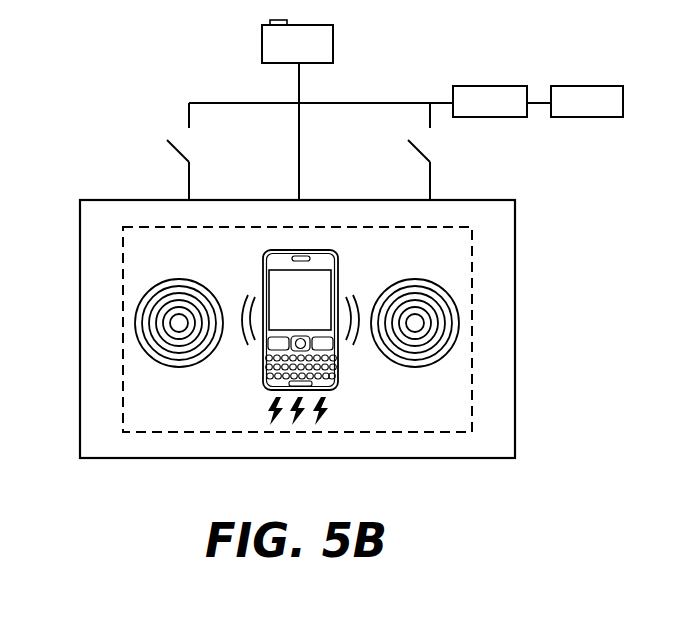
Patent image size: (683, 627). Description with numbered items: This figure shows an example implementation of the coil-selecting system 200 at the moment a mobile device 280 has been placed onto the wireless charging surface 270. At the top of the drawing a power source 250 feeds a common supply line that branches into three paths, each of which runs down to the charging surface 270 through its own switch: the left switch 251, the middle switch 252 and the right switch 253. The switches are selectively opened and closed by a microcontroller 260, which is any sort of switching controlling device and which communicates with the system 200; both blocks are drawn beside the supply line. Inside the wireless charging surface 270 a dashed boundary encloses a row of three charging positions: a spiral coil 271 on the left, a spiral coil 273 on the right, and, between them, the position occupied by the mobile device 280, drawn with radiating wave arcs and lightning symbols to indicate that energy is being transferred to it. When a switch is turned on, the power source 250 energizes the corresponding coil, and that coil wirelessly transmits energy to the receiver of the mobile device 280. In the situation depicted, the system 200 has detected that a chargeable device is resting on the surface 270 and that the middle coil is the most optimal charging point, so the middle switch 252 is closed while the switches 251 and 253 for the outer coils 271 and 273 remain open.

The system 200 is at (587, 101).
The power source 250 is at (333, 44).
The switch 251 is at (158, 151).
The switch 252 is at (278, 151).
The switch 253 is at (402, 151).
The microcontroller 260 is at (490, 101).
The wireless charging surface 270 is at (80, 225).
The coil 271 is at (172, 280).
The coil 273 is at (410, 282).
The mobile device 280 is at (263, 290).